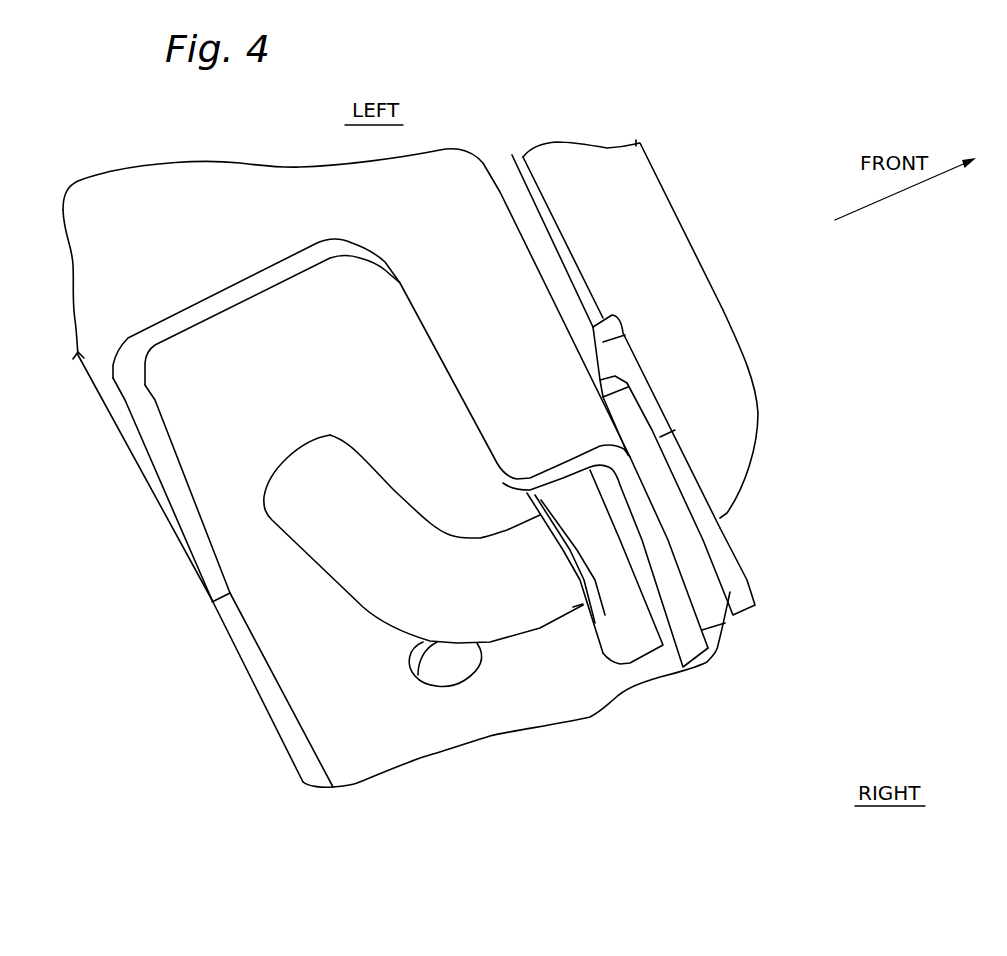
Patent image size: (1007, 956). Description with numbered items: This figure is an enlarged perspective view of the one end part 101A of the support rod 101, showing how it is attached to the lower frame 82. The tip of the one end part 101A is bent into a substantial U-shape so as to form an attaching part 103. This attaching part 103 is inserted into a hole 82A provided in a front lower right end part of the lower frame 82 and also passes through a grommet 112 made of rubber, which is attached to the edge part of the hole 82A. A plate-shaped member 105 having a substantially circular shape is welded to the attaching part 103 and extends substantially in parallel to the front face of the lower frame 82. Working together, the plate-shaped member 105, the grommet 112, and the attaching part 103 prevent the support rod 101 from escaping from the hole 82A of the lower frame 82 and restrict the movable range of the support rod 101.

The lower frame 82 is at (502, 193).
The hole 82A is at (583, 603).
The support rod 101 is at (647, 195).
The one end part 101A is at (707, 308).
The attaching part 103 is at (387, 627).
The plate-shaped member 105 is at (753, 580).
The grommet 112 is at (620, 668).